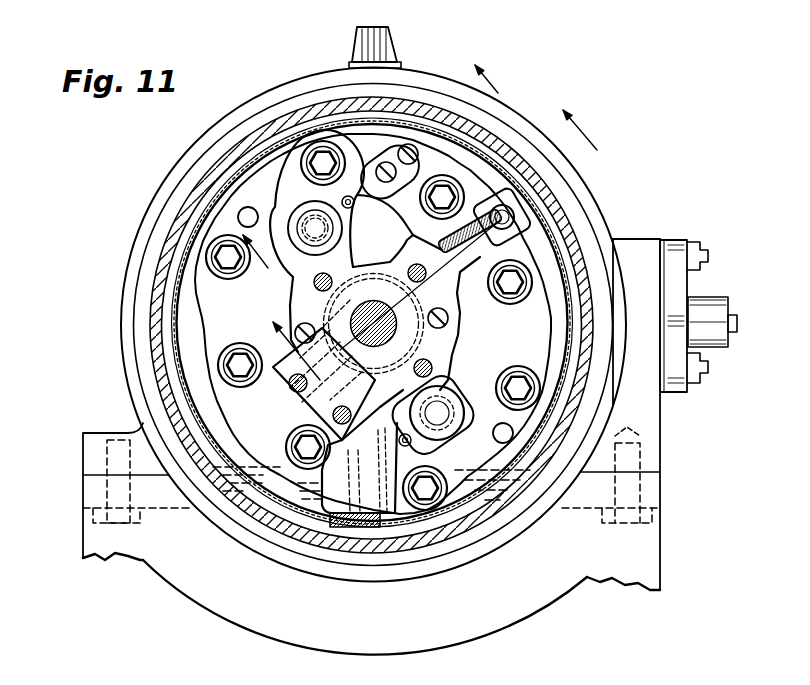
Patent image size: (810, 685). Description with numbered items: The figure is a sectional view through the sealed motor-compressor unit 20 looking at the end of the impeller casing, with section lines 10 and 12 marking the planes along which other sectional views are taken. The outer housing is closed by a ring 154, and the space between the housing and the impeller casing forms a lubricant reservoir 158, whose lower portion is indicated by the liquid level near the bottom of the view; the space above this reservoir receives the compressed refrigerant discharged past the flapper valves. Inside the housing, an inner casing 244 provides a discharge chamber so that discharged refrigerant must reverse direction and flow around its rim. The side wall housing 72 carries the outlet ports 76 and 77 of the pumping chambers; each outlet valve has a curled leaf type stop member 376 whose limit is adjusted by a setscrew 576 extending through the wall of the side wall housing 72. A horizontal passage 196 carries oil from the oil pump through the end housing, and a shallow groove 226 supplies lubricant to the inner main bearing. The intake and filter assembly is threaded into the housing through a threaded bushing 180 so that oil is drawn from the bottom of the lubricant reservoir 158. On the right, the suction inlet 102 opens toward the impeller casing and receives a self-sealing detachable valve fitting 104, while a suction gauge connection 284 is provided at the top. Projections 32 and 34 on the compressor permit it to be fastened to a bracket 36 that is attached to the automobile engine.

The section line 10- 10 is at (421, 253).
The section line 12- 12 is at (370, 172).
The sealed motor-compressor unit 20 is at (186, 153).
The projection 32 is at (640, 508).
The projection 34 is at (92, 455).
The bracket 36 is at (528, 610).
The side wall housing 72 is at (254, 428).
The outlet port 76 is at (292, 210).
The outlet port 77 is at (458, 402).
The suction inlet 102 is at (632, 243).
The valve fitting 104 is at (685, 240).
The ring 154 is at (122, 302).
The lubricant reservoir 158 is at (371, 483).
The threaded bushing 180 is at (370, 527).
The horizontal passage 196 is at (272, 392).
The shallow groove 226 is at (296, 328).
The inner casing 244 is at (192, 240).
The suction gauge connection 284 is at (356, 47).
The valve spring stop 376 is at (440, 148).
The setscrew 576 is at (352, 198).